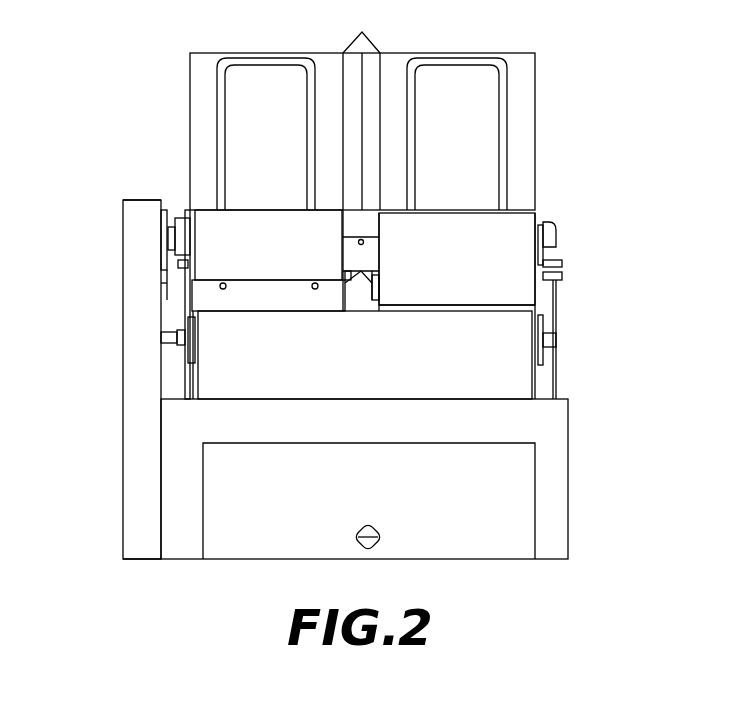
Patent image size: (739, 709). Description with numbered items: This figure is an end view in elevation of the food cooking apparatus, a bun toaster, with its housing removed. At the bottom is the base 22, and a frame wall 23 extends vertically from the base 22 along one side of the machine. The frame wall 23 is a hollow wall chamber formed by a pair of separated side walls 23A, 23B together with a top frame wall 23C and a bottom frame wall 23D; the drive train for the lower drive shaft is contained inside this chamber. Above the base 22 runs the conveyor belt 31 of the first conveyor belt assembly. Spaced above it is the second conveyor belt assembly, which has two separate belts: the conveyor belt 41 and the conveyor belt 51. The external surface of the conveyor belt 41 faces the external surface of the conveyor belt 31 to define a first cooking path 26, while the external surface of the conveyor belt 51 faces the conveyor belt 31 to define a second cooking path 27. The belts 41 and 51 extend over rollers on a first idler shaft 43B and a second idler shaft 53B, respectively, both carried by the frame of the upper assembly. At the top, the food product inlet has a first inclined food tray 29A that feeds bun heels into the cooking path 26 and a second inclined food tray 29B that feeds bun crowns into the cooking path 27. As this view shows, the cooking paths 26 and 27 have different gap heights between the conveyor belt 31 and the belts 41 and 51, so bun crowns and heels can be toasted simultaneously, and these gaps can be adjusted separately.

The base 22 is at (180, 543).
The frame wall 23 is at (140, 457).
The side wall 23A is at (122, 240).
The side wall 23B is at (162, 283).
The top frame wall 23C is at (133, 199).
The bottom frame wall 23D is at (137, 557).
The first cooking path 26 is at (462, 305).
The second cooking path 27 is at (273, 298).
The first inclined food tray 29A is at (448, 88).
The second inclined food tray 29B is at (265, 84).
The conveyor belt 31 is at (373, 368).
The conveyor belt 41 is at (472, 266).
The first idler shaft 43B is at (556, 240).
The conveyor belt 51 is at (277, 260).
The second idler shaft 53B is at (182, 220).